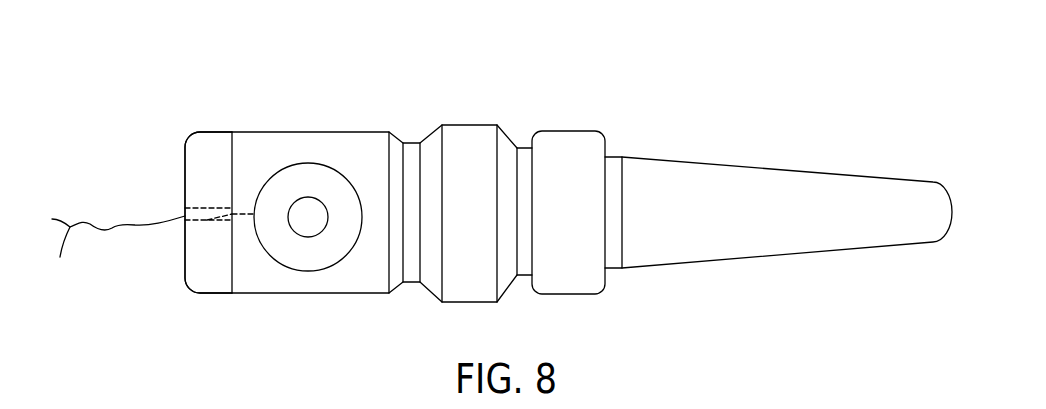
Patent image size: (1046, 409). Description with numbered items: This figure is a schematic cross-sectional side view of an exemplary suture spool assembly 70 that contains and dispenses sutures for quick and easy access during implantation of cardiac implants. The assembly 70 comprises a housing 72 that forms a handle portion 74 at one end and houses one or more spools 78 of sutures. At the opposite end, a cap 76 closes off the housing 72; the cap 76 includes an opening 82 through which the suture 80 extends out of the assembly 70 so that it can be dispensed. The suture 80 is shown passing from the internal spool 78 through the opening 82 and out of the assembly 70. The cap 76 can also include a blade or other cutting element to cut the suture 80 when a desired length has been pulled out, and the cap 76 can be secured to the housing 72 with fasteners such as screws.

The suture spool assembly 70 is at (165, 97).
The housing 72 is at (348, 132).
The handle portion 74 is at (622, 78).
The cap 76 is at (202, 292).
The spool 78 is at (277, 261).
The suture 80 is at (118, 252).
The opening 82 is at (185, 212).